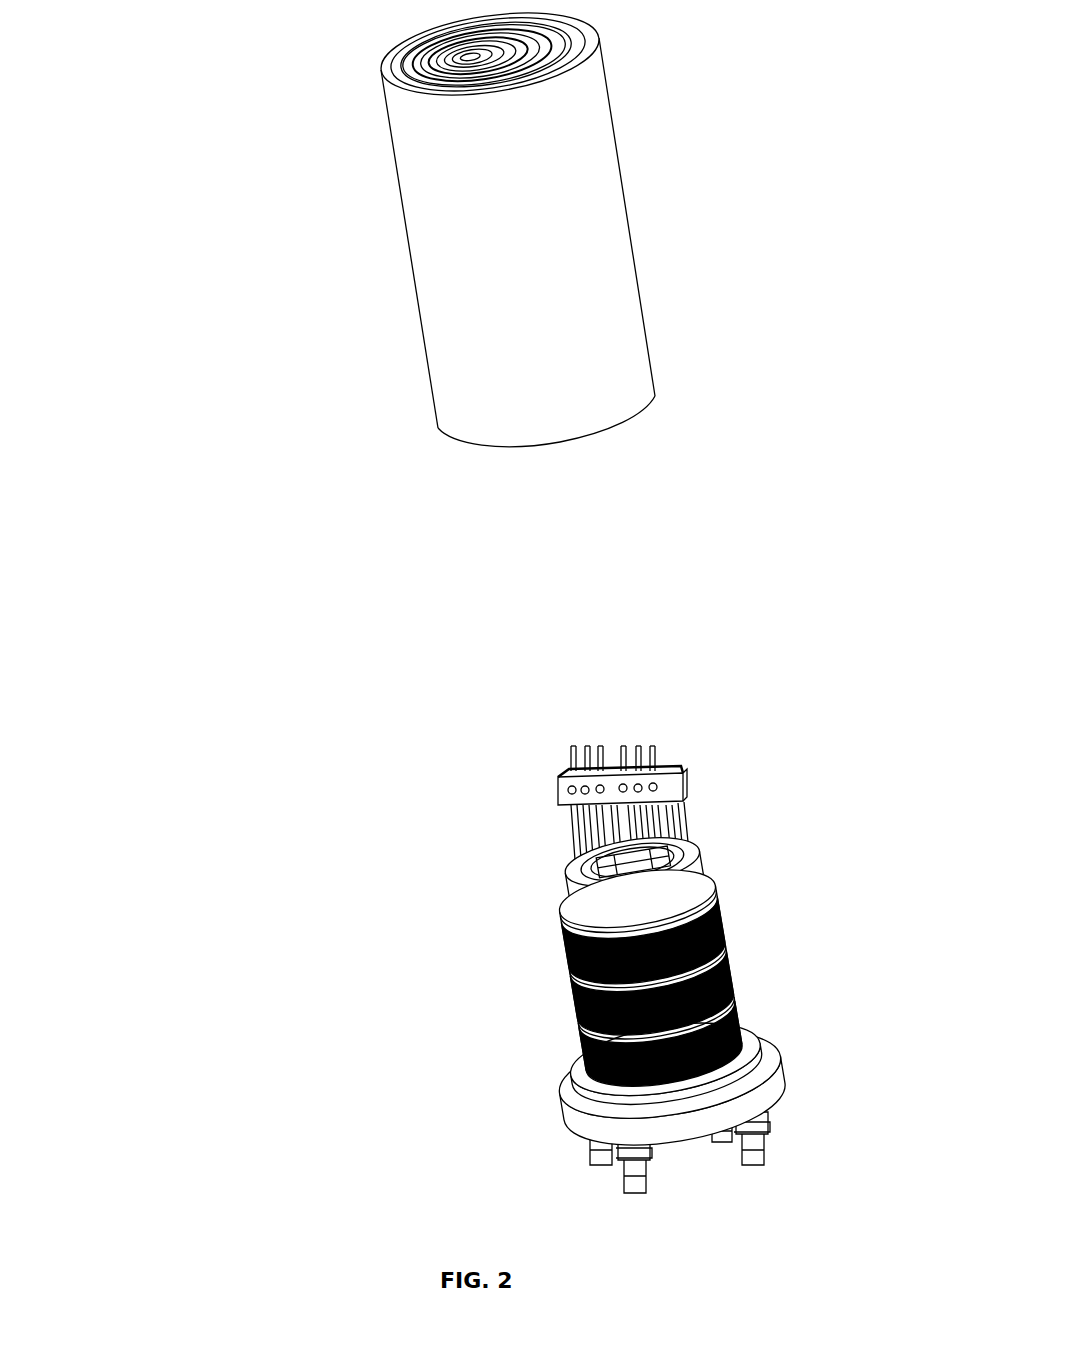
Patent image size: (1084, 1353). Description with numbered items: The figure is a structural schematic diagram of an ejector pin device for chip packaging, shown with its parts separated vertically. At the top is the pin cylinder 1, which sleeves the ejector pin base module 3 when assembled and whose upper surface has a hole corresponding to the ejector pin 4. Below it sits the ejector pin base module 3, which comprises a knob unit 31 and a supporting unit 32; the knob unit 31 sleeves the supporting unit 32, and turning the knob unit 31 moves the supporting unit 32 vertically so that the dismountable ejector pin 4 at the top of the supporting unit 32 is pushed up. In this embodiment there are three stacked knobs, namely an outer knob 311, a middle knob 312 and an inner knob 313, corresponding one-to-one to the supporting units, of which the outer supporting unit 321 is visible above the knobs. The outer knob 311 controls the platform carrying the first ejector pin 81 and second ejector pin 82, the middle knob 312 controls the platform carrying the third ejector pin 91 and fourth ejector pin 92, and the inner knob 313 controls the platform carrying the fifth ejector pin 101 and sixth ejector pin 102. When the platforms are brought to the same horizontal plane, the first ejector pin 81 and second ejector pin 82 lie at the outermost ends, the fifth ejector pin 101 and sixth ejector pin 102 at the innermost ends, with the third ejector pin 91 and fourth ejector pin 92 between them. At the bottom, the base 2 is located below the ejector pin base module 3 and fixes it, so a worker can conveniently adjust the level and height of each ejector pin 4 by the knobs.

The pin cylinder 1 is at (586, 165).
The base 2 is at (752, 1088).
The ejector pin base module 3 is at (368, 618).
The ejector pin 4 is at (566, 621).
The knob unit 31 is at (402, 945).
The outer knob 311 is at (560, 930).
The middle knob 312 is at (567, 997).
The inner knob 313 is at (570, 1053).
The supporting unit 32 is at (464, 760).
The outer supporting unit 321 is at (583, 900).
The first ejector pin 81 is at (568, 766).
The second ejector pin 82 is at (656, 759).
The third ejector pin 91 is at (583, 762).
The fourth ejector pin 92 is at (643, 765).
The fifth ejector pin 101 is at (599, 765).
The sixth ejector pin 102 is at (628, 765).